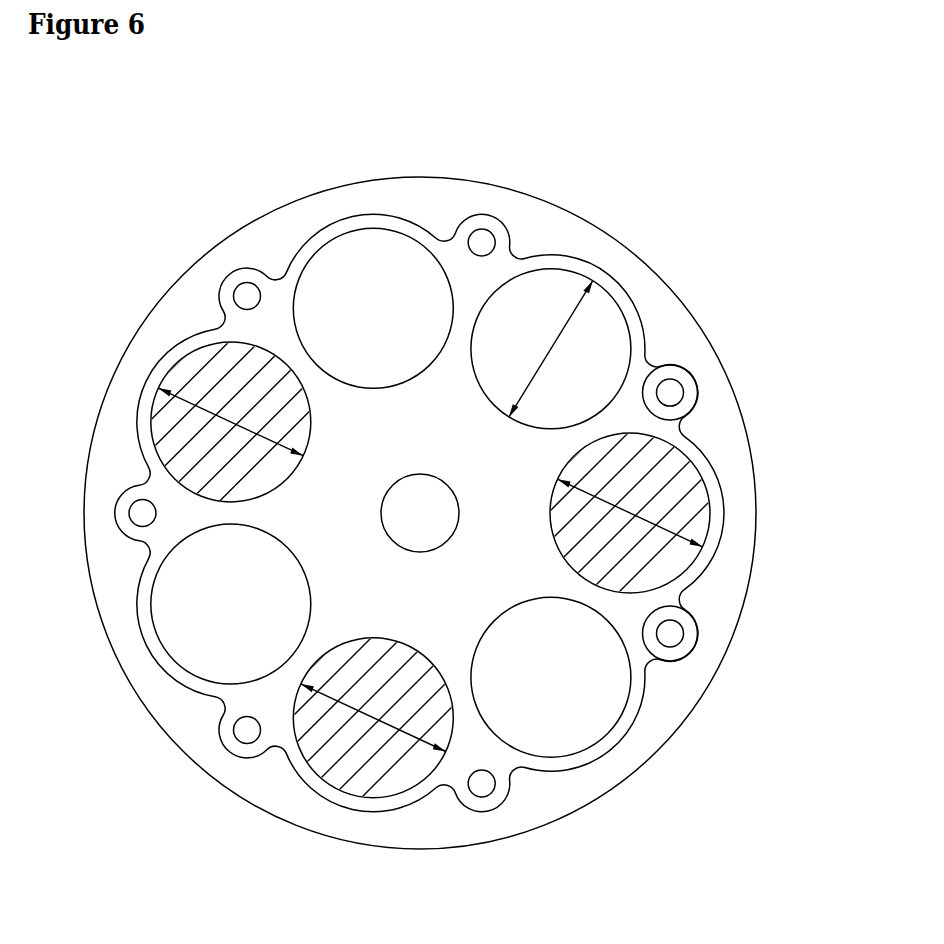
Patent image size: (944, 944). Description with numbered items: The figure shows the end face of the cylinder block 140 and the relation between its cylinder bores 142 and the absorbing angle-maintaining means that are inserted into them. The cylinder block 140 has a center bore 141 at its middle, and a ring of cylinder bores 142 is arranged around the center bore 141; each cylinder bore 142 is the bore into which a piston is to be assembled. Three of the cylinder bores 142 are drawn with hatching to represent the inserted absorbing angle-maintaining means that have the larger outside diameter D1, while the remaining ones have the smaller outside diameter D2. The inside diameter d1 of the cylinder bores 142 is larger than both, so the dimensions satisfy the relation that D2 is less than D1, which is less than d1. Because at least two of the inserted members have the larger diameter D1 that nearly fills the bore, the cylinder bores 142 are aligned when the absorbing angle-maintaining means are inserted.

The cylinder block 140 is at (642, 282).
The center bore 141 is at (398, 533).
The cylinder bores 142 is at (345, 262).
The outside diameter of the larger absorbing angle-maintaining means D1 is at (231, 397).
The inside diameter of the cylinder bores d1 is at (553, 345).
The outside diameter of the remaining absorbing angle-maintaining means D2 is at (390, 728).